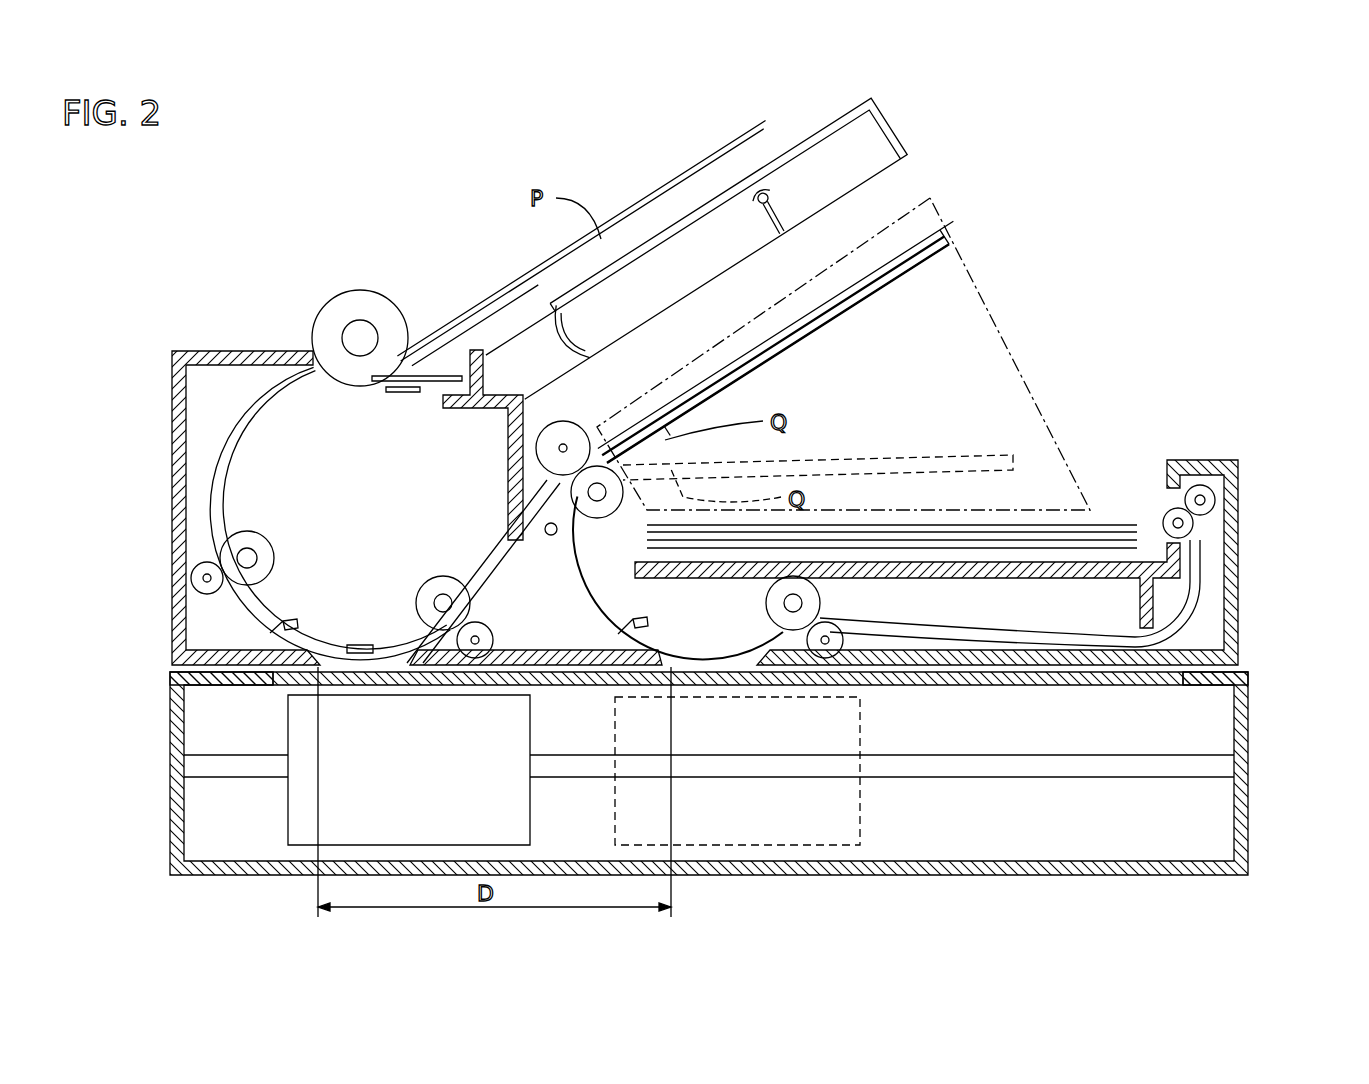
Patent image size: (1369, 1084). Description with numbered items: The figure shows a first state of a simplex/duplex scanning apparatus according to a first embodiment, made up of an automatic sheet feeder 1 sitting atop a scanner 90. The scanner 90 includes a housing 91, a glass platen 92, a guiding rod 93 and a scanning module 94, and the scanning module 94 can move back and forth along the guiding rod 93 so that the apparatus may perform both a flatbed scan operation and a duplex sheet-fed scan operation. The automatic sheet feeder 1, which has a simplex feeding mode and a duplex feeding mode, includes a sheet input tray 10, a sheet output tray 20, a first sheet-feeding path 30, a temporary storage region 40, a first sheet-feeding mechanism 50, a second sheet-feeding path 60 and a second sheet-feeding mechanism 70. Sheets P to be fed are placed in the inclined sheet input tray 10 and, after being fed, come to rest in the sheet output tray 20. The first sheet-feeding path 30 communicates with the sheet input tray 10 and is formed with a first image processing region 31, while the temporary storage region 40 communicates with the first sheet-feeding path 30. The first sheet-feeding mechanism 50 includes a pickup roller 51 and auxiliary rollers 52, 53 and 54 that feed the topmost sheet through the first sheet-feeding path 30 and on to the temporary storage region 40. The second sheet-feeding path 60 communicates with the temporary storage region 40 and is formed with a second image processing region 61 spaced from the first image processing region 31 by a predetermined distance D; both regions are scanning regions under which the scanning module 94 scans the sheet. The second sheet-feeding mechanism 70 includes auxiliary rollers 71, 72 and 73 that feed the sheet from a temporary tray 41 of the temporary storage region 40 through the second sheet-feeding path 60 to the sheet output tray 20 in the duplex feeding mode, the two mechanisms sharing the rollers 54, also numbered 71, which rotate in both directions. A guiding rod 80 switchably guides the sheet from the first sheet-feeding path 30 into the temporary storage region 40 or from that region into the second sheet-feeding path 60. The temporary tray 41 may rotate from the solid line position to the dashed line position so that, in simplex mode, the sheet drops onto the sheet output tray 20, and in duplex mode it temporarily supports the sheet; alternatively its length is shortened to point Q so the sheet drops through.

The automatic sheet feeder 1 is at (172, 353).
The sheet input tray 10 is at (887, 170).
The sheet output tray 20 is at (1152, 560).
The first sheet-feeding path 30 is at (232, 448).
The first image processing region 31 is at (360, 645).
The temporary storage region 40 is at (987, 303).
The temporary tray 41 is at (947, 230).
The first sheet-feeding mechanism 50 is at (1182, 145).
The pickup roller 51 is at (335, 294).
The auxiliary roller 52 is at (205, 572).
The auxiliary roller 53 is at (470, 606).
The auxiliary roller 54 is at (588, 488).
The second sheet-feeding path 60 is at (945, 625).
The second image processing region 61 is at (715, 665).
The second sheet-feeding mechanism 70 is at (1302, 145).
The auxiliary roller 71 is at (861, 330).
The auxiliary roller 72 is at (810, 643).
The auxiliary roller 73 is at (1188, 522).
The guiding rod 80 is at (548, 518).
The scanner 90 is at (660, 773).
The housing 91 is at (175, 833).
The glass platen 92 is at (285, 684).
The guiding rod 93 is at (1030, 758).
The scanning module 94 is at (288, 810).